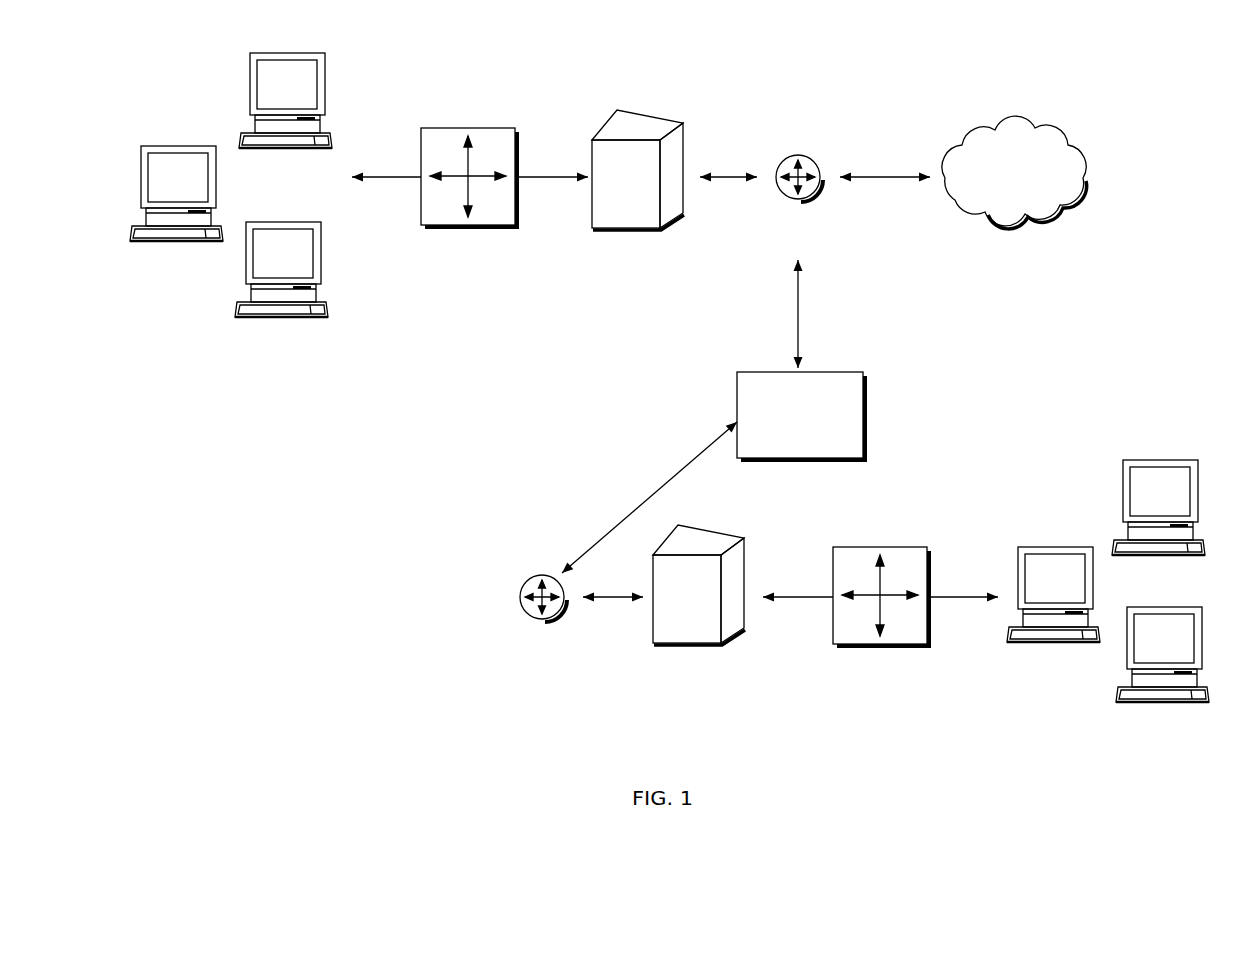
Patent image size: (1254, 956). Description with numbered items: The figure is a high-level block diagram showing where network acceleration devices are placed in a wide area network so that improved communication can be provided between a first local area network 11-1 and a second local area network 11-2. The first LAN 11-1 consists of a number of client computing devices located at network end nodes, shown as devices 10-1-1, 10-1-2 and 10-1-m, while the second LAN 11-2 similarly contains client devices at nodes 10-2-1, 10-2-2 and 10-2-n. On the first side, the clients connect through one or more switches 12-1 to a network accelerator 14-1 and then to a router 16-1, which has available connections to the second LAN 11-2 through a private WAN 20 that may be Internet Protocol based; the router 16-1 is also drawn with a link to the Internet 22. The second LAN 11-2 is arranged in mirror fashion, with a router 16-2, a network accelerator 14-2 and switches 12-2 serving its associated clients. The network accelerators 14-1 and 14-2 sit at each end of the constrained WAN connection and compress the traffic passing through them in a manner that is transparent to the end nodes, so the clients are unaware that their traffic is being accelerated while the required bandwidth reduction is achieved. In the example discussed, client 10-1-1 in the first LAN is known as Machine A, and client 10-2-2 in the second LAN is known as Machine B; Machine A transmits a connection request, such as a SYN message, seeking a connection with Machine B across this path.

The client computing device 10-1-1 is at (153, 146).
The client computing device 10-1-2 is at (271, 53).
The client computing device 10-1-m is at (247, 291).
The first local area network 11-1 is at (383, 350).
The switch 12-1 is at (443, 128).
The network accelerator 14-1 is at (621, 112).
The router 16-1 is at (789, 157).
The Internet 22 is at (1046, 132).
The private WAN 20 is at (865, 413).
The router 16-2 is at (524, 588).
The network accelerator 14-2 is at (715, 531).
The switch 12-2 is at (906, 547).
The client computing device 10-2-1 is at (1033, 547).
The client computing device 10-2-2 is at (1142, 460).
The client computing device 10-2-n is at (1143, 607).
The second local area network 11-2 is at (1075, 743).
The Machine A is at (141, 182).
The Machine B is at (1200, 487).